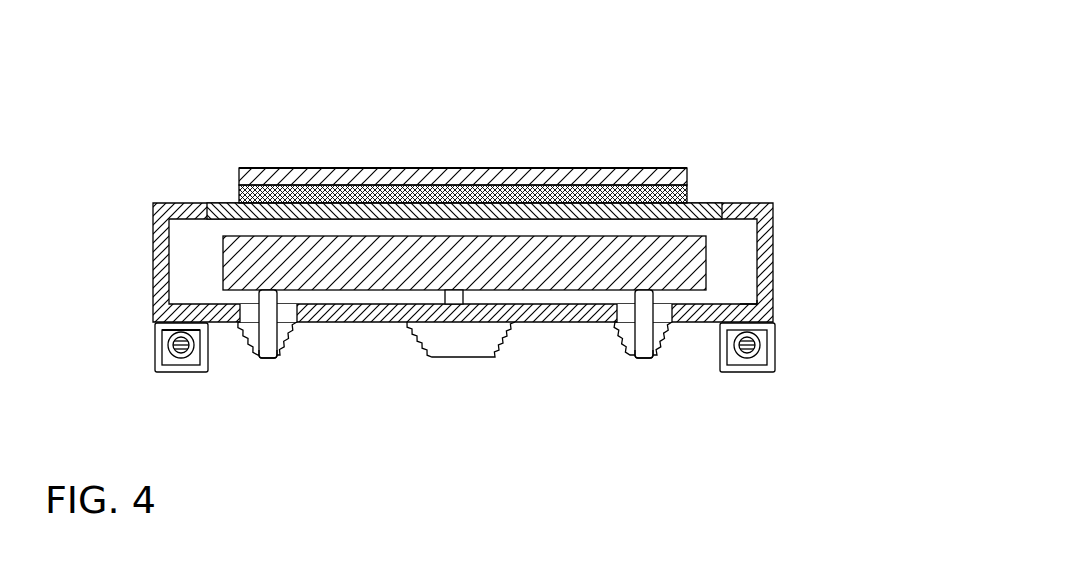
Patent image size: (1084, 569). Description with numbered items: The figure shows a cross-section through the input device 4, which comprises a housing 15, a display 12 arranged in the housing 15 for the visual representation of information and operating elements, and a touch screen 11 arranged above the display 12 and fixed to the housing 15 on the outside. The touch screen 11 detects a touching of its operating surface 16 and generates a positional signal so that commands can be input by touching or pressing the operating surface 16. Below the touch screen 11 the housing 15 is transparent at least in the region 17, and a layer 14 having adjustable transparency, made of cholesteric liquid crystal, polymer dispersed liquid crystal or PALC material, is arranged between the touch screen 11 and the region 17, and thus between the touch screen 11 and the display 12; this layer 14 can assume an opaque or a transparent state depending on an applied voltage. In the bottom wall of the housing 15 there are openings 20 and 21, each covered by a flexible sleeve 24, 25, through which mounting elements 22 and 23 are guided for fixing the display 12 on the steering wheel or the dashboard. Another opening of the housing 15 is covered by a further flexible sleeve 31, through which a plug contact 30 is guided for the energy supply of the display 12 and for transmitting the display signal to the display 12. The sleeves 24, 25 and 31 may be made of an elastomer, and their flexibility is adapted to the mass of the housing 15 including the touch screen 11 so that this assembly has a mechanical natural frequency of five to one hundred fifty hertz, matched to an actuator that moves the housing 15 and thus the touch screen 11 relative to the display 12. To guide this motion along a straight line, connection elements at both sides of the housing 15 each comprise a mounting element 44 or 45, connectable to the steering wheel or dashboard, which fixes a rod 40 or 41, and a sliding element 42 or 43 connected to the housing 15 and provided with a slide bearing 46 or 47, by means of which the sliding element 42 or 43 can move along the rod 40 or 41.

The input device 4 is at (803, 107).
The touch screen 11 is at (405, 177).
The display 12 is at (492, 253).
The layer having adjustable transparency 14 is at (618, 193).
The housing 15 is at (755, 205).
The operating surface 16 is at (308, 167).
The transparent region 17 is at (222, 201).
The opening 20 is at (287, 312).
The opening 21 is at (662, 312).
The mounting element 22 is at (265, 332).
The mounting element 23 is at (643, 335).
The flexible sleeve 24 is at (275, 358).
The flexible sleeve 25 is at (652, 358).
The plug contact 30 is at (453, 297).
The flexible sleeve 31 is at (477, 338).
The rod 40 is at (177, 338).
The rod 41 is at (749, 330).
The sliding element 42 is at (167, 355).
The sliding element 43 is at (763, 358).
The mounting element 44 is at (169, 367).
The mounting element 45 is at (753, 368).
The slide bearing 46 is at (180, 327).
The slide bearing 47 is at (775, 314).